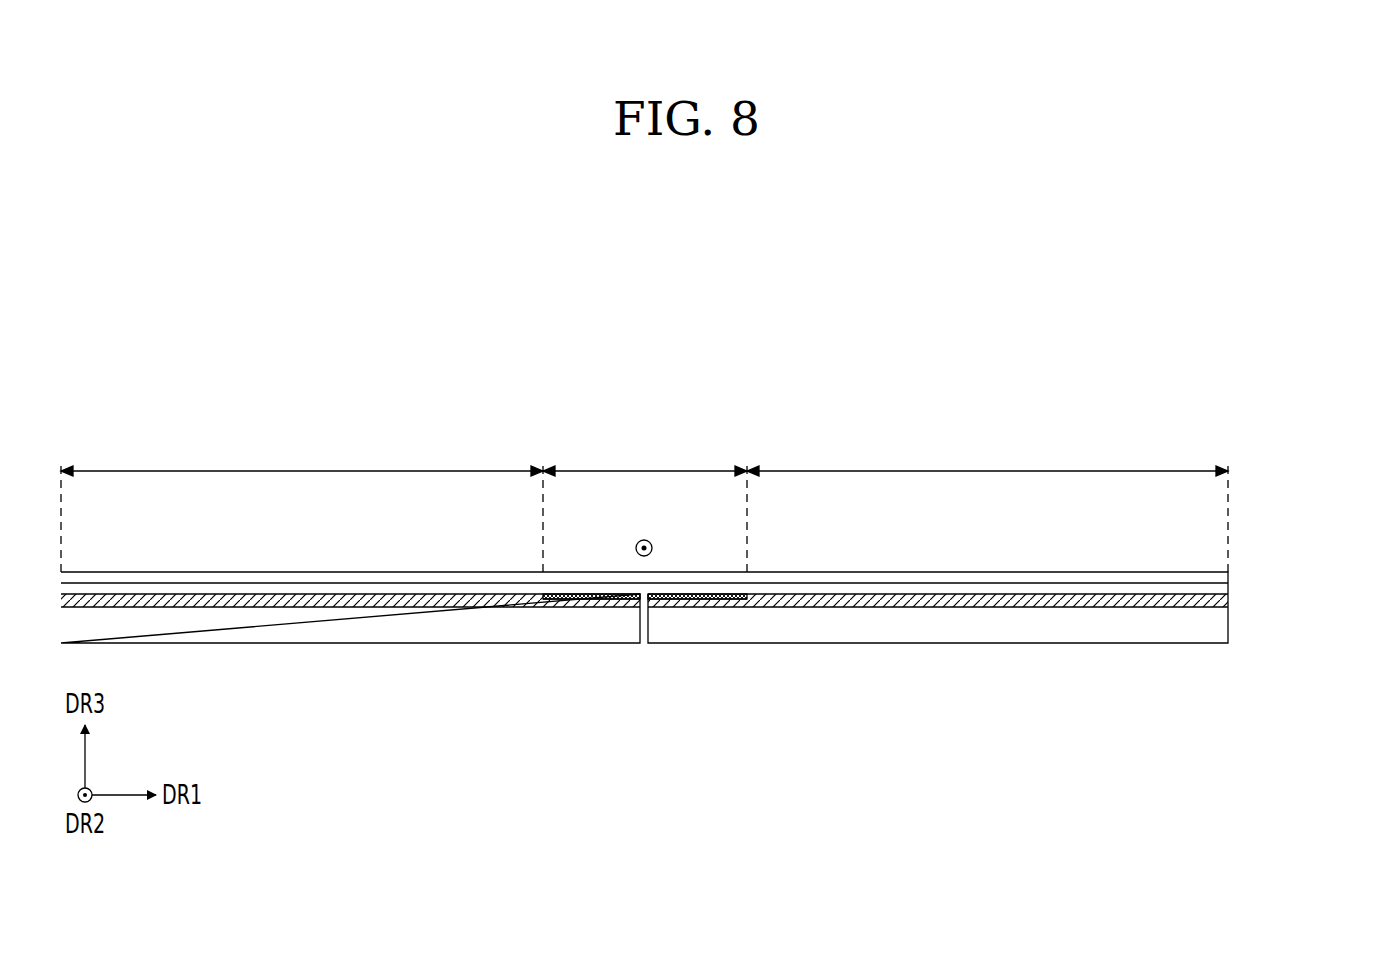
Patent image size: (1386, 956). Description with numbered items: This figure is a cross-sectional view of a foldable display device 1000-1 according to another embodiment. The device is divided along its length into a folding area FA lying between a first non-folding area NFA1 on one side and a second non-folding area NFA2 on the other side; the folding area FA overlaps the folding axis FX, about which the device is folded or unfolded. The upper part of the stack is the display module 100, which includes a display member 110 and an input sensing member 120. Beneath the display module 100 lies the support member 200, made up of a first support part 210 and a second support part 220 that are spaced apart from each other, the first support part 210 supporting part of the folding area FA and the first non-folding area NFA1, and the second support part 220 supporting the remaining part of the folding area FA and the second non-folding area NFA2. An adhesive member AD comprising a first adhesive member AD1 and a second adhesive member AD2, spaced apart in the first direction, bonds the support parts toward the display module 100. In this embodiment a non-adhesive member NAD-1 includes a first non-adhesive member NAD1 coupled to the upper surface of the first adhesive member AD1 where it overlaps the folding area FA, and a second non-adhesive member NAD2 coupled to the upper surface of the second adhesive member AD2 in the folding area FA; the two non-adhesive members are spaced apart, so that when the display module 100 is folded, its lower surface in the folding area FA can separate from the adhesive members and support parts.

The display device 1000-1 is at (1178, 413).
The display module 100 is at (1318, 548).
The display member 110 is at (1228, 588).
The input sensing member 120 is at (1228, 577).
The support member 200 is at (698, 717).
The first support part 210 is at (673, 633).
The second support part 220 is at (613, 633).
The second non-folding area NFA2 is at (302, 505).
The folding area FA is at (645, 505).
The first non-folding area NFA1 is at (987, 505).
The folding axis FX is at (644, 530).
The second non-adhesive member NAD2 is at (579, 605).
The first non-adhesive member NAD1 is at (708, 605).
The non-adhesive member NAD-1 is at (775, 773).
The second adhesive member AD2 is at (485, 603).
The first adhesive member AD1 is at (794, 605).
The adhesive member AD is at (817, 855).